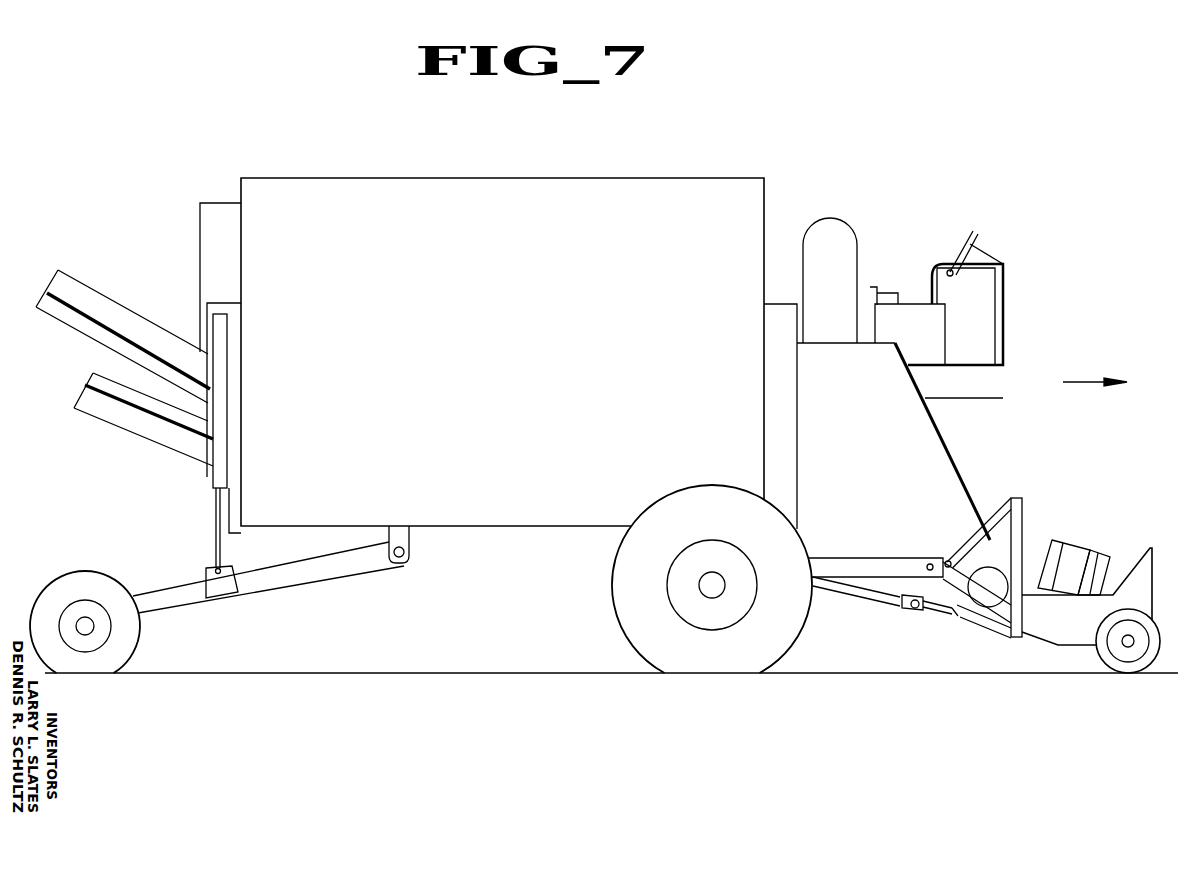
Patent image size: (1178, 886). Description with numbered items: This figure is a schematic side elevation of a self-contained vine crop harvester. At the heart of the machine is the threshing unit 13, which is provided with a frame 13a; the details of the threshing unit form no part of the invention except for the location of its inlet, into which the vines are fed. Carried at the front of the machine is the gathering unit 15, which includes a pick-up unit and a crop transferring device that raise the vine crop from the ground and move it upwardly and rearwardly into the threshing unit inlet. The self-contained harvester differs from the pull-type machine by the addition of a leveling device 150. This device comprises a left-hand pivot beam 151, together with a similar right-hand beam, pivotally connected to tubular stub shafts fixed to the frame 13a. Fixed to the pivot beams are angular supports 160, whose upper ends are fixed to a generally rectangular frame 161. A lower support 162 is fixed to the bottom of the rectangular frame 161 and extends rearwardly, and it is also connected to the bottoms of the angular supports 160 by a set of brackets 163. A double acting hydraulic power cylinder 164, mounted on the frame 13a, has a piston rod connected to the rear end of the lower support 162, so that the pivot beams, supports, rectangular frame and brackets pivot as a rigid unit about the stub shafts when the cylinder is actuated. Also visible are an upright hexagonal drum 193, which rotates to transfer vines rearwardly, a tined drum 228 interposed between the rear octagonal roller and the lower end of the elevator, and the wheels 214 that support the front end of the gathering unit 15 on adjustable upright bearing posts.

The threshing unit 13 is at (630, 176).
The frame 13a is at (824, 548).
The gathering unit 15 is at (1093, 682).
The leveling device 150 is at (940, 632).
The left-hand pivot beam 151 is at (955, 560).
The angular supports 160 is at (1000, 512).
The rectangular frame 161 is at (1022, 504).
The lower support 162 is at (1000, 632).
The brackets 163 is at (960, 628).
The double acting hydraulic power cylinder 164 is at (862, 585).
The upright hexagonal drum 193 is at (1090, 550).
The wheels 214 is at (1131, 669).
The tined drum 228 is at (1020, 548).